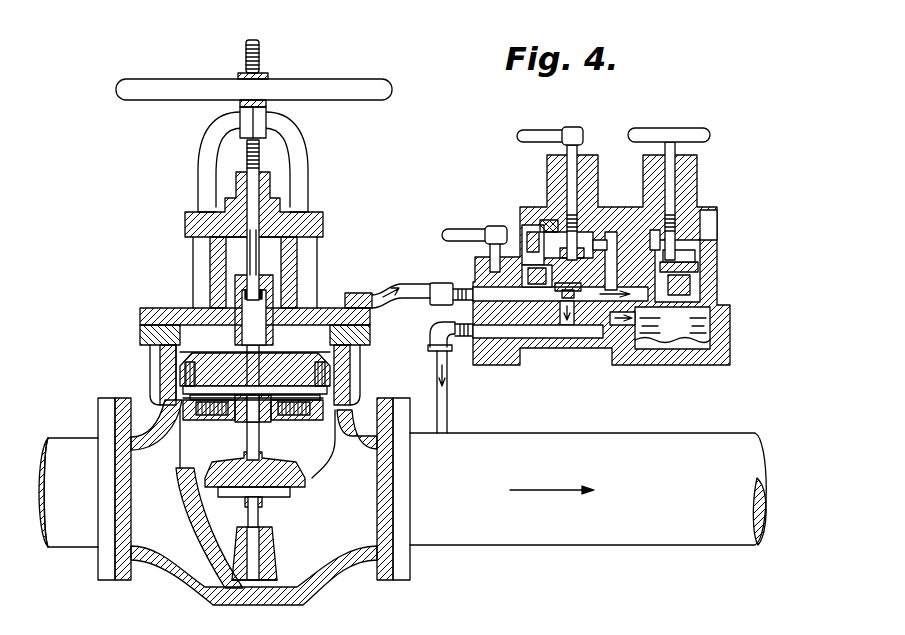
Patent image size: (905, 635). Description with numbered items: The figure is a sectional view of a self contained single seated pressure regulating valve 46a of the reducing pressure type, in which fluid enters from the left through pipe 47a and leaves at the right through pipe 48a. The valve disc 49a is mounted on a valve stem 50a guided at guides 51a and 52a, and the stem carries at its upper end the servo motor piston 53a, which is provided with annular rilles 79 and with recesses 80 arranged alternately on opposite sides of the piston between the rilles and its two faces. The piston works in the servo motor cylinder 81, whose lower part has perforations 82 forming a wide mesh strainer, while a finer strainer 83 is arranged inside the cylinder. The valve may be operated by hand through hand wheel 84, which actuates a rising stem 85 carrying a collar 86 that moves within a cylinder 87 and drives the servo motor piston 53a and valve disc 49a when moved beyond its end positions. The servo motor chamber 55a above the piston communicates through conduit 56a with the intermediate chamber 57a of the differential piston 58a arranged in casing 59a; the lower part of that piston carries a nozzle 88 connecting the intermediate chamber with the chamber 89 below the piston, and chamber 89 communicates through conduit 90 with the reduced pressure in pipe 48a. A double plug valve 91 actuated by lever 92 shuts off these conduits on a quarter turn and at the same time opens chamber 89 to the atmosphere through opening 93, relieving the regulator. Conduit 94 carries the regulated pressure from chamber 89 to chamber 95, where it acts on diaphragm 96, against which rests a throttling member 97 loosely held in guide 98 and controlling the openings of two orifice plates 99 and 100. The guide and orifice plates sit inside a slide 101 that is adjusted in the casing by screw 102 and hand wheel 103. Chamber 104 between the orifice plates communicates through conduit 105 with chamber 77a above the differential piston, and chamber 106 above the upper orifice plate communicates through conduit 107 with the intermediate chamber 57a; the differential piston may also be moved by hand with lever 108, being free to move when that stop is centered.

The self contained single seated pressure regulating valve 46a is at (332, 575).
The pipe 47a is at (67, 542).
The pipe 48a is at (555, 545).
The valve disc 49a is at (306, 480).
The valve stem 50a is at (262, 441).
The guide 51a is at (276, 540).
The guide 52a is at (244, 421).
The servo motor piston 53a is at (294, 357).
The servo motor chamber 55a is at (208, 338).
The conduit 56a is at (414, 300).
The intermediate chamber 57a is at (548, 340).
The differential piston 58a is at (540, 258).
The casing 59a is at (540, 228).
The chamber 77a is at (556, 222).
The annular rilles 79 is at (322, 387).
The recesses 80 is at (192, 371).
The servo motor cylinder 81 is at (176, 356).
The perforations 82 is at (206, 421).
The finer strainer 83 is at (196, 396).
The hand wheel 84 is at (309, 84).
The rising stem 85 is at (262, 56).
The collar 86 is at (276, 300).
The cylinder 87 is at (272, 280).
The nozzle 88 is at (566, 345).
The chamber 89 is at (608, 335).
The conduit 90 is at (447, 406).
The double plug valve 91 is at (471, 350).
The lever 92 is at (467, 236).
The opening 93 is at (492, 366).
The conduit 94 is at (610, 355).
The chamber 95 is at (699, 345).
The diaphragm 96 is at (664, 350).
The throttling member 97 is at (700, 280).
The guide 98 is at (712, 322).
The orifice plate 99 is at (703, 297).
The orifice plate 100 is at (703, 251).
The slide 101 is at (705, 238).
The screw 102 is at (700, 206).
The hand wheel 103 is at (694, 132).
The chamber 104 is at (703, 265).
The conduit 105 is at (600, 231).
The chamber 106 is at (712, 222).
The conduit 107 is at (635, 231).
The lever 108 is at (536, 132).